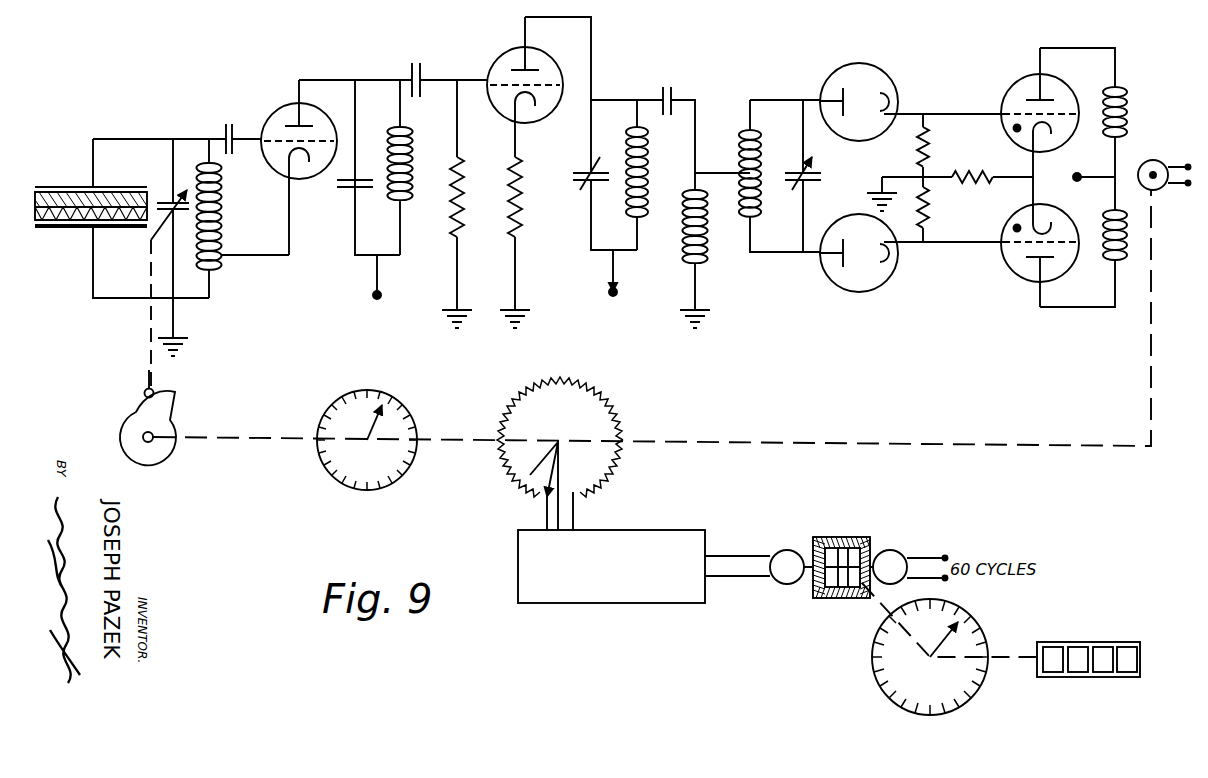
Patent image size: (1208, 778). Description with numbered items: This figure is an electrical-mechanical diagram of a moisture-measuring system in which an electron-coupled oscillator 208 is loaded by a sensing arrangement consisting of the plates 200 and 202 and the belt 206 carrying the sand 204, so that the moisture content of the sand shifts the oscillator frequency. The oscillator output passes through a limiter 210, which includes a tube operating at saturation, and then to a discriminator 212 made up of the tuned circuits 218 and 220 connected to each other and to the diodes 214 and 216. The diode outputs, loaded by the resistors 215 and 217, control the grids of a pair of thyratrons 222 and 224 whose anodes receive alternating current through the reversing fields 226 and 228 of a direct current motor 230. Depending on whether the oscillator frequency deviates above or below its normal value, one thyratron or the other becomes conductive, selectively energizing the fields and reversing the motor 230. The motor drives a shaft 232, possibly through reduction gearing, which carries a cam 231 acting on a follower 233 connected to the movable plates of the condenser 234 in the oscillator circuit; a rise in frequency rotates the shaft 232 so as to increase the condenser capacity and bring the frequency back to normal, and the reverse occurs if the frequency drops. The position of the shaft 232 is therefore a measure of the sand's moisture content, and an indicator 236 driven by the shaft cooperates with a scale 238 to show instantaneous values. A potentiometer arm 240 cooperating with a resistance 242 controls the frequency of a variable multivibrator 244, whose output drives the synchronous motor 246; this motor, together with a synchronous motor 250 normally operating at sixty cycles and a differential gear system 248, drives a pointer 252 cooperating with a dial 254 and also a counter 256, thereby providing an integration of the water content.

The plate 200 is at (84, 187).
The plate 202 is at (80, 228).
The sand 204 is at (33, 197).
The belt 206 is at (33, 218).
The electron-coupled oscillator 208 is at (230, 118).
The limiter 210 is at (472, 62).
The discriminator 212 is at (777, 92).
The diode 214 is at (878, 66).
The resistor 215 is at (930, 158).
The diode 216 is at (880, 292).
The resistor 217 is at (930, 202).
The tuned circuit 218 is at (616, 92).
The tuned circuit 220 is at (753, 262).
The thyratron 222 is at (1010, 86).
The thyratron 224 is at (1008, 272).
The reversing field 226 is at (1127, 105).
The reversing field 228 is at (1125, 258).
The direct current motor 230 is at (1145, 162).
The cam 231 is at (172, 448).
The shaft 232 is at (1125, 445).
The follower 233 is at (144, 391).
The condenser 234 is at (168, 201).
The indicator 236 is at (357, 432).
The scale 238 is at (412, 428).
The potentiometer arm 240 is at (535, 470).
The resistance 242 is at (602, 393).
The multivibrator 244 is at (637, 530).
The synchronous motor 246 is at (790, 550).
The differential gear system 248 is at (848, 535).
The synchronous motor 250 is at (893, 550).
The pointer 252 is at (945, 645).
The dial 254 is at (968, 695).
The counter 256 is at (1078, 677).